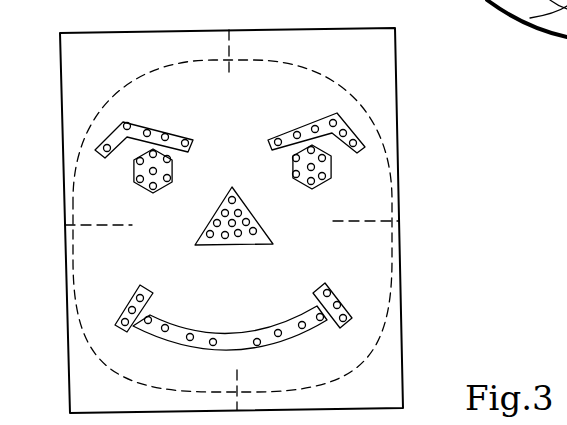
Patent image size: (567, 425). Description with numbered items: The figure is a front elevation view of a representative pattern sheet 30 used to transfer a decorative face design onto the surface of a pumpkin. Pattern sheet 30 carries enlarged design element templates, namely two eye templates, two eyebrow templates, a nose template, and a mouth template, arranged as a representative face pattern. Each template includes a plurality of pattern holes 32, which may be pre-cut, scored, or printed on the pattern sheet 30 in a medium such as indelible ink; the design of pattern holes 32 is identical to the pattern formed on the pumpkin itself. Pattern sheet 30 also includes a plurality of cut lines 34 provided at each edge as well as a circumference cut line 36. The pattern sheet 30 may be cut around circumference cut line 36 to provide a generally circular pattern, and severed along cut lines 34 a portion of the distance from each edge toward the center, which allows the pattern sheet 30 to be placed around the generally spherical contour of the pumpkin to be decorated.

The pattern sheet 30 is at (512, 10).
The pattern holes 32 is at (145, 126).
The cut lines 34 is at (230, 53).
The circumference cut line 36 is at (318, 382).